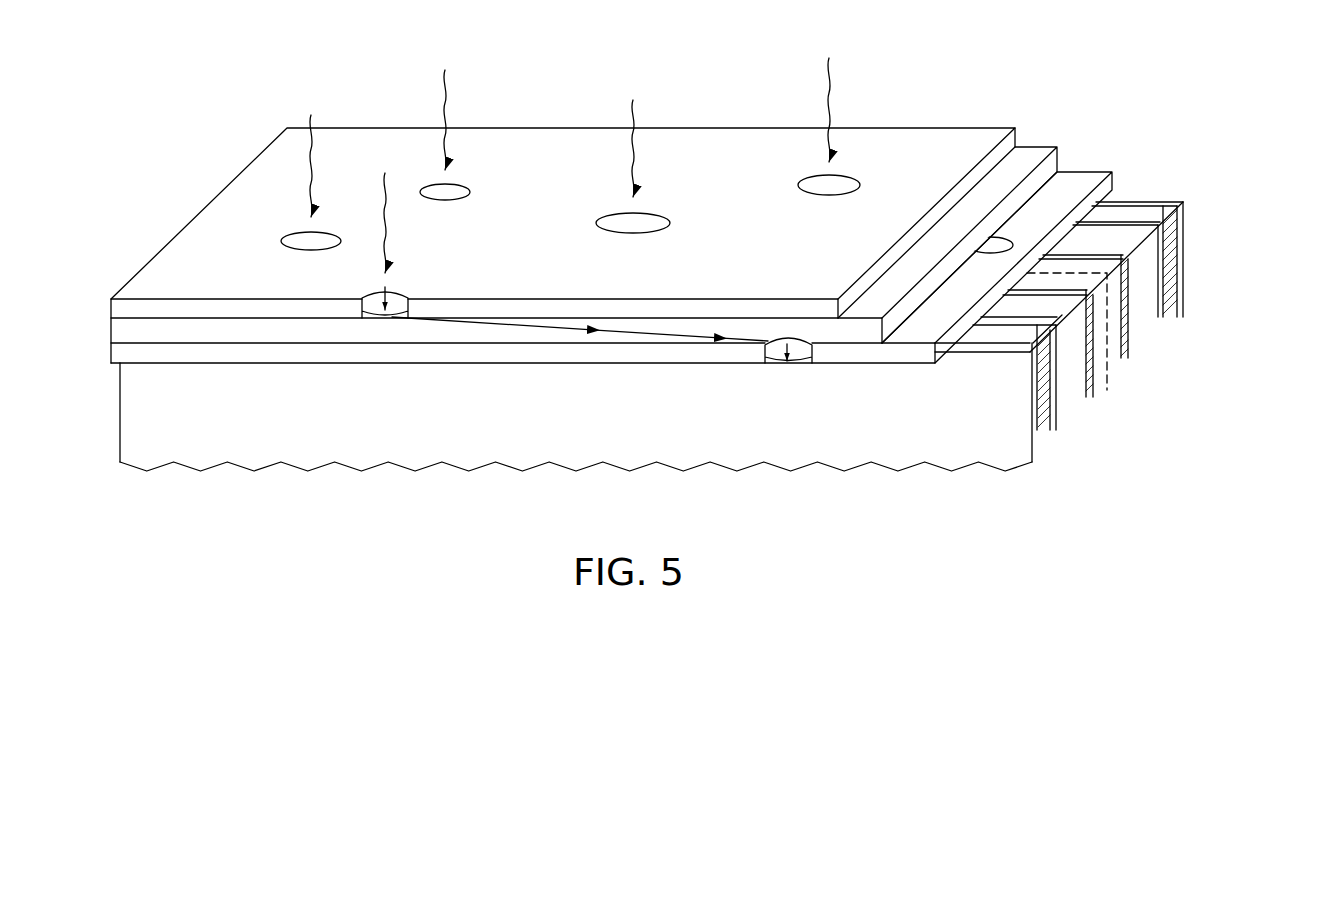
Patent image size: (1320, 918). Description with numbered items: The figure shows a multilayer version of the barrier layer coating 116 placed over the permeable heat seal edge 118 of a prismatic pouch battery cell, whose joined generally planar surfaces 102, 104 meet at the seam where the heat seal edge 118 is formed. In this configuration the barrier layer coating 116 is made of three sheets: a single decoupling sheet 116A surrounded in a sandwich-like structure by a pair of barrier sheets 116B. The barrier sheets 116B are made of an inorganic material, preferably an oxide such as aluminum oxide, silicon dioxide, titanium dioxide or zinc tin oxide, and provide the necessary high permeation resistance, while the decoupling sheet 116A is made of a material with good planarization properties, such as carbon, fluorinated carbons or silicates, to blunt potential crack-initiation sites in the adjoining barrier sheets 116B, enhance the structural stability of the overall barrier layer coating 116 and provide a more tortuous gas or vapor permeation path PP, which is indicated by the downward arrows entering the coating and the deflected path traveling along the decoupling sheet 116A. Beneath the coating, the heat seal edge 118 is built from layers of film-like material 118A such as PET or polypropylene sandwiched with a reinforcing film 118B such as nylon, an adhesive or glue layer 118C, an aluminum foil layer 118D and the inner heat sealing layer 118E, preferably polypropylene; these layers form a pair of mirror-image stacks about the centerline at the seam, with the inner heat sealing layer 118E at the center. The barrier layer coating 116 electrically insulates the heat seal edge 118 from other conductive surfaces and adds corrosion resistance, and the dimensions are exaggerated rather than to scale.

The planar surface 102 is at (943, 472).
The planar surface 104 is at (1168, 205).
The barrier layer coating 116 is at (107, 297).
The decoupling sheet 116A is at (1057, 167).
The barrier sheet 116B is at (1015, 138).
The heat seal edge 118 is at (1217, 213).
The film-like material layer 118A is at (1183, 232).
The reinforcing film 118B is at (1177, 258).
The adhesive or glue layer 118C is at (1168, 298).
The aluminum foil layer 118D is at (1158, 320).
The inner heat sealing layer 118E is at (1108, 370).
The permeation path PP is at (829, 95).